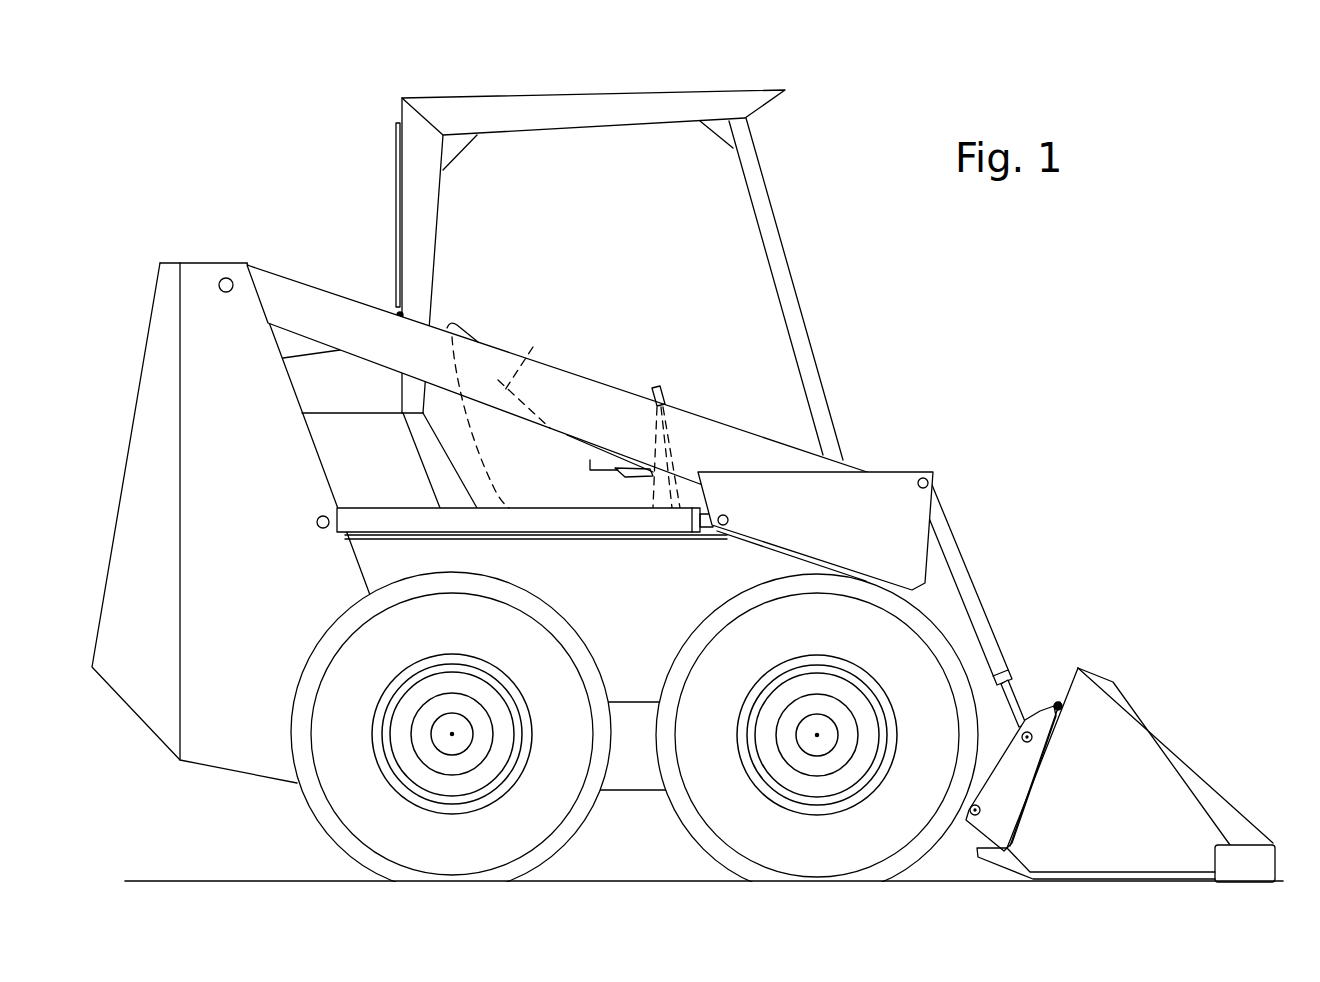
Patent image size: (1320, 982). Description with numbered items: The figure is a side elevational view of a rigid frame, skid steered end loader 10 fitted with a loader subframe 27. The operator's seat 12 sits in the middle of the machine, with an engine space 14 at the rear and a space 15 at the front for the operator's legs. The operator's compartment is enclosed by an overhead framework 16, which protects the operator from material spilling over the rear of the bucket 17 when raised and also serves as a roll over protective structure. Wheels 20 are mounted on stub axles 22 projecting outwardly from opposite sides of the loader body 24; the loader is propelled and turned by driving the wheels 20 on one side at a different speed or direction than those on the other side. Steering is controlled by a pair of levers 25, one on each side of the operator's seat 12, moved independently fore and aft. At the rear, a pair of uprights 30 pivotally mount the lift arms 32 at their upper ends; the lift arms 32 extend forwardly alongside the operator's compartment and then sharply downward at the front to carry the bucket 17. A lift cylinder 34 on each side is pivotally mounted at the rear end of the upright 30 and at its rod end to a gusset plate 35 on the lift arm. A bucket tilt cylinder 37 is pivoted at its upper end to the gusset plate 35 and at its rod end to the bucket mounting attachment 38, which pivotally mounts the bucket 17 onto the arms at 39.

The end loader 10 is at (667, 475).
The operator's seat 12 is at (530, 356).
The engine space 14 is at (386, 469).
The space for the operator's legs 15 is at (762, 423).
The overhead framework 16 is at (606, 104).
The bucket 17 is at (1127, 718).
The wheels 20 is at (547, 620).
The stub axles 22 is at (458, 732).
The loader body 24 is at (638, 755).
The levers 25 is at (655, 387).
The loader subframe 27 is at (603, 637).
The uprights 30 is at (143, 470).
The lift arms 32 is at (325, 312).
The lift cylinder 34 is at (408, 524).
The gusset plate 35 is at (822, 518).
The bucket tilt cylinder 37 is at (947, 535).
The bucket mounting attachment 38 is at (1037, 712).
The bucket pivot 39 is at (983, 805).